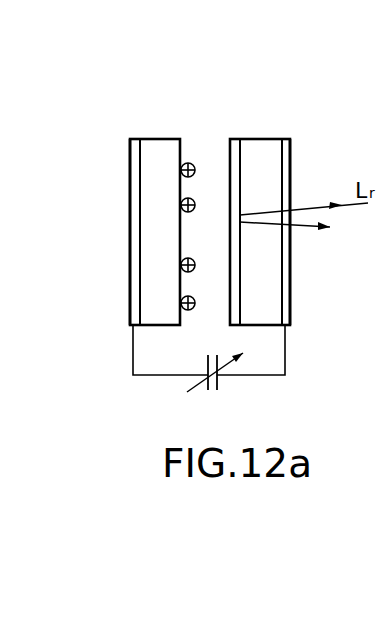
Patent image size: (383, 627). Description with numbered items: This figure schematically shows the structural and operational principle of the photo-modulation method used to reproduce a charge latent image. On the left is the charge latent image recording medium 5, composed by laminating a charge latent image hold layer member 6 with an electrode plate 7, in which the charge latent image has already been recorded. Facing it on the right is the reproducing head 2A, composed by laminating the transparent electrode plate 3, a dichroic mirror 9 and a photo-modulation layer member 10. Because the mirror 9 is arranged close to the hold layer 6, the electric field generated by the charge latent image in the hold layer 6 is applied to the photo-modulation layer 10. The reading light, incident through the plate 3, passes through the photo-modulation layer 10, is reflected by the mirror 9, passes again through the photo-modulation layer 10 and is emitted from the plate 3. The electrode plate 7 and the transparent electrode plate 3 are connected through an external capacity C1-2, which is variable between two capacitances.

The charge latent image recording medium 5 is at (122, 138).
The charge latent image hold layer member 6 is at (160, 158).
The electrode plate 7 is at (132, 175).
The dichroic mirror 9 is at (233, 145).
The photo-modulation layer member 10 is at (263, 153).
The reproducing head 2A is at (292, 130).
The transparent electrode plate 3 is at (292, 163).
The external capacity C1-2 is at (209, 374).